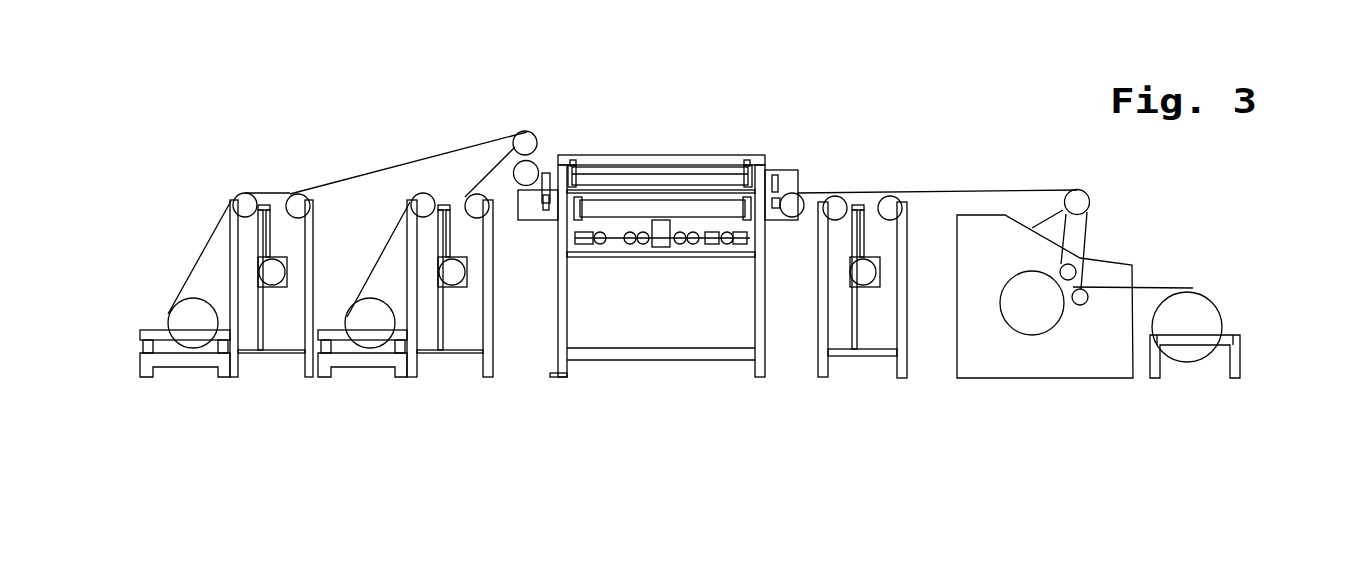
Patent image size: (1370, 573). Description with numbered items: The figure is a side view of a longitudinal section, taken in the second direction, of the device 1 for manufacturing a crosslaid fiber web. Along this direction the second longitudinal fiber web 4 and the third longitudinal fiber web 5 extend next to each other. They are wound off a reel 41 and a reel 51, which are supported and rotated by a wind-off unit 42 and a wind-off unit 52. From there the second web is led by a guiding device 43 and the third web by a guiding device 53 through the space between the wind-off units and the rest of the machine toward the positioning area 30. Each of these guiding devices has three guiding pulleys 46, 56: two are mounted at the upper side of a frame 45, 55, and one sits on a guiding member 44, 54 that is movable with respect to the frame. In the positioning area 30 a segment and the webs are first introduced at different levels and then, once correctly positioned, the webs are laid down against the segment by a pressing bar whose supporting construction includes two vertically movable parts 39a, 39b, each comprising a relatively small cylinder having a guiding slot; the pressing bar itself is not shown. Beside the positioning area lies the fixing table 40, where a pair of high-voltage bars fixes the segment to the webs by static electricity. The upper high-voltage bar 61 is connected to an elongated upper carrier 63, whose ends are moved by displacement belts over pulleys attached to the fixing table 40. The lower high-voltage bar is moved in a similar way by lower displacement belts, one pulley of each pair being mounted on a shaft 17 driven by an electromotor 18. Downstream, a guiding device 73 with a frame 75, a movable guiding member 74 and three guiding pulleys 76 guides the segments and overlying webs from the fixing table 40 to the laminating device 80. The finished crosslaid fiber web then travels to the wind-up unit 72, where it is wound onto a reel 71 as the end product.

The device 1 is at (827, 108).
The second longitudinal fiber web 4 is at (363, 174).
The third longitudinal fiber web 5 is at (365, 272).
The shaft 17 is at (713, 237).
The electromotor 18 is at (662, 233).
The positioning area 30 is at (630, 130).
The part of supporting construction of pressing bar 39a is at (549, 165).
The part of supporting construction of pressing bar 39b is at (773, 173).
The fixing table 40 is at (673, 130).
The reel 41 is at (193, 323).
The wind-off unit 42 is at (145, 383).
The guiding device 43 is at (215, 175).
The guiding member 44 is at (287, 287).
The frame 45 is at (275, 203).
The guiding pulleys 46 is at (245, 194).
The reel 51 is at (367, 323).
The wind-off unit 52 is at (340, 383).
The guiding device 53 is at (410, 177).
The guiding member 54 is at (462, 287).
The frame 55 is at (458, 197).
The guiding pulleys 56 is at (425, 195).
The upper high-voltage bar 61 is at (718, 172).
The upper carrier 63 is at (587, 158).
The reel 71 is at (1202, 325).
The wind-up unit 72 is at (1257, 327).
The guiding device 73 is at (907, 157).
The guiding member 74 is at (868, 287).
The frame 75 is at (903, 227).
The guiding pulleys 76 is at (840, 197).
The laminating device 80 is at (1101, 272).